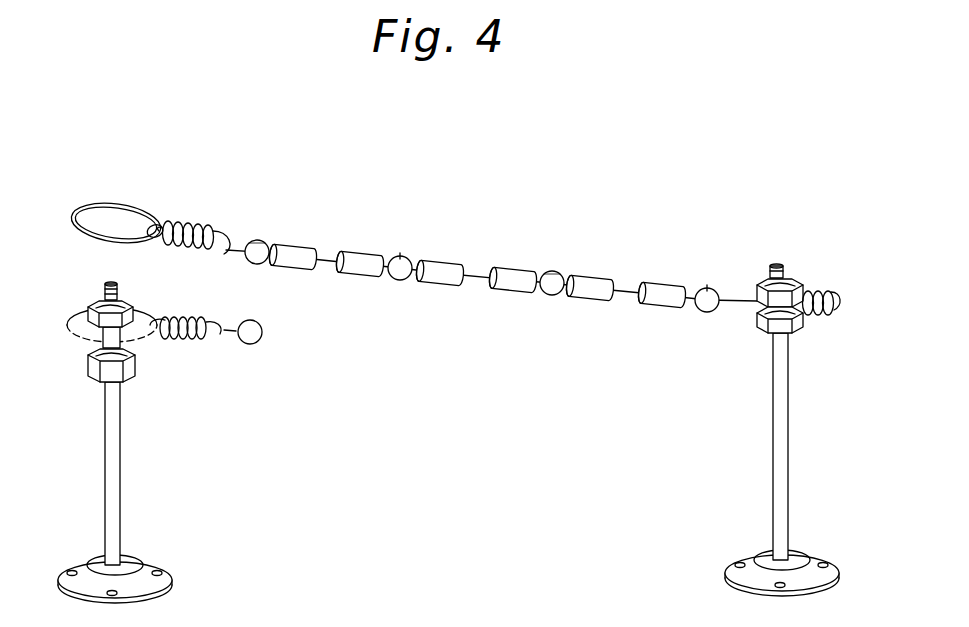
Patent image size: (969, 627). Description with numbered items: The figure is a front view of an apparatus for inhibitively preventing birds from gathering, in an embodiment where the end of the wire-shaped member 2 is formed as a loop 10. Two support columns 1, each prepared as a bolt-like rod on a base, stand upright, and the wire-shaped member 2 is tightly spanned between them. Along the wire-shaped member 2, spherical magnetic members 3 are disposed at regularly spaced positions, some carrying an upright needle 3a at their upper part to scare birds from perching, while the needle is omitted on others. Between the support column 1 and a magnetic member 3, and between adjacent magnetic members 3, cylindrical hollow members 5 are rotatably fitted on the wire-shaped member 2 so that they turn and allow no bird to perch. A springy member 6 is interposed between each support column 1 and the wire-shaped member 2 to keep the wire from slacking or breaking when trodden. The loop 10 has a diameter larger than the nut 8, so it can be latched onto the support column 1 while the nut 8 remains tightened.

The support column 1 is at (118, 512).
The wire-shaped member 2 is at (328, 262).
The magnetic member 3 is at (258, 258).
The needle 3a is at (257, 240).
The cylindrical hollow member 5 is at (297, 248).
The springy member 6 is at (175, 228).
The nut 8 is at (88, 303).
The loop 10 is at (121, 203).